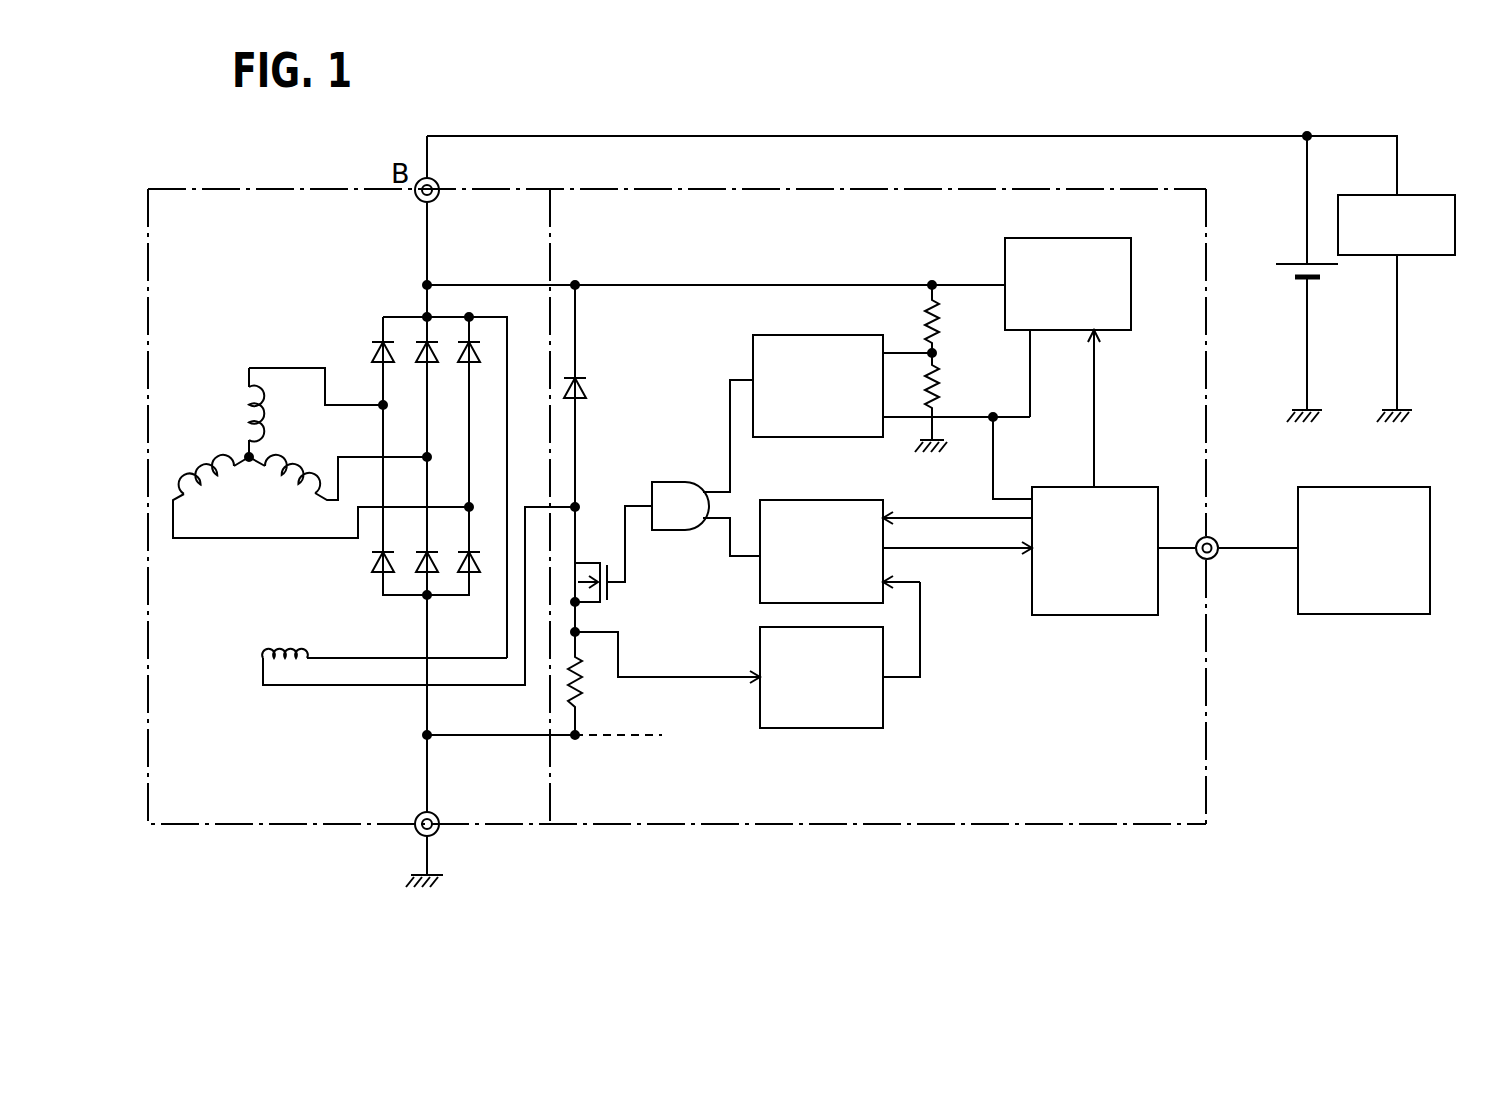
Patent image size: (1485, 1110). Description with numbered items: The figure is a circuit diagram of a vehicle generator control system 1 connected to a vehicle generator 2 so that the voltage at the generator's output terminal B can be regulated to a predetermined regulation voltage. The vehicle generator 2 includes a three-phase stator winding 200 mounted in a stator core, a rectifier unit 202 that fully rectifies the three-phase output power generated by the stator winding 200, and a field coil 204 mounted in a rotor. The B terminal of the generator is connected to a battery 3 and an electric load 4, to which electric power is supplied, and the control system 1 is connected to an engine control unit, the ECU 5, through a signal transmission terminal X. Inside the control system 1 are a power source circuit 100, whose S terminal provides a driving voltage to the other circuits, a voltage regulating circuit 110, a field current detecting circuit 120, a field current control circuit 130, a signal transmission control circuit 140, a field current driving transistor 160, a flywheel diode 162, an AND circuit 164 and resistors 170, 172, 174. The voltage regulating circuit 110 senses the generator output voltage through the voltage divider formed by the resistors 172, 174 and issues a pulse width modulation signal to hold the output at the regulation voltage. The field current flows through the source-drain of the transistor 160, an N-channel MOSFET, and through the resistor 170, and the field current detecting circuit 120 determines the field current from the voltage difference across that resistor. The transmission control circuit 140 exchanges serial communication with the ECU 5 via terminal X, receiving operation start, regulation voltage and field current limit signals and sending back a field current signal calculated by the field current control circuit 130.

The vehicle generator control system 1 is at (1150, 190).
The vehicle generator 2 is at (247, 190).
The battery 3 is at (1296, 263).
The electric load 4 is at (1380, 195).
The engine control unit (ECU) 5 is at (1308, 487).
The power source circuit 100 is at (1115, 222).
The voltage regulating circuit 110 is at (790, 335).
The field current detecting circuit 120 is at (785, 627).
The field current control circuit 130 is at (868, 484).
The signal transmission control circuit 140 is at (1160, 470).
The field current driving transistor 160 is at (592, 562).
The flywheel diode 162 is at (582, 378).
The AND circuit 164 is at (688, 481).
The resistor 170 is at (630, 697).
The resistor 172 is at (926, 330).
The resistor 174 is at (942, 390).
The three-phase stator winding 200 is at (243, 450).
The rectifier unit 202 is at (400, 316).
The field coil 204 is at (262, 648).